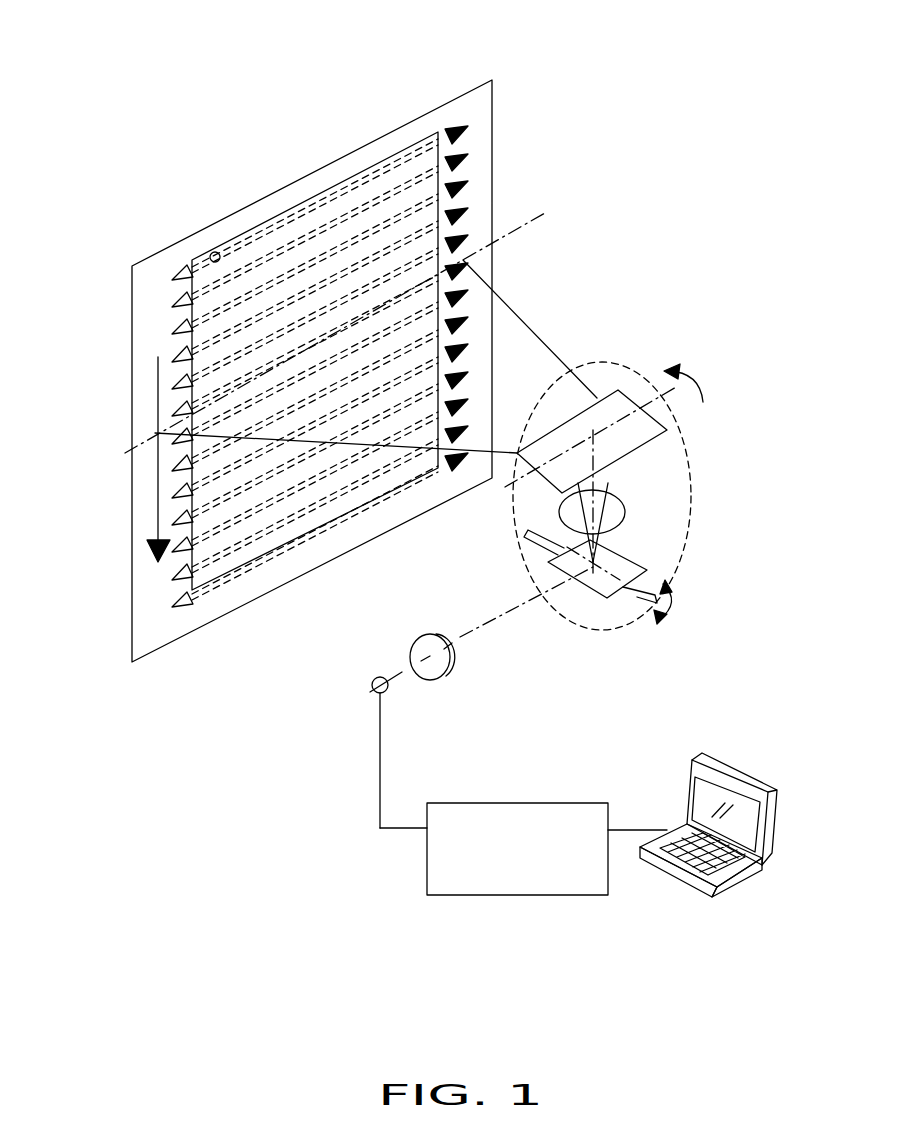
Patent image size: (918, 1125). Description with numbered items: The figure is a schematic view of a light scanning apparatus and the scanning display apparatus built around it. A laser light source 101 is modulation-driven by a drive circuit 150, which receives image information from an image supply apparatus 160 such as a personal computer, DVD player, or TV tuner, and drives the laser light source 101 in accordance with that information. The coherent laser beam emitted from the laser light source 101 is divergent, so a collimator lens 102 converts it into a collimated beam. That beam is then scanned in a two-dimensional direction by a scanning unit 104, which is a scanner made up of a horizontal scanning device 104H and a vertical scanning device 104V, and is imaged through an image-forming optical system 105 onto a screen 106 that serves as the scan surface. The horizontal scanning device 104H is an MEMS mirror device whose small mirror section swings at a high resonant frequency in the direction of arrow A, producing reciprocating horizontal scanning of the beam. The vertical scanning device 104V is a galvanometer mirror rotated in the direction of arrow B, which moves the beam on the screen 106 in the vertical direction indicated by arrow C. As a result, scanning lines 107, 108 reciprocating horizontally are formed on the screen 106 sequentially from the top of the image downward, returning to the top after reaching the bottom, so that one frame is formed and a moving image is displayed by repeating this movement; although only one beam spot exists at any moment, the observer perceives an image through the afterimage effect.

The laser light source 101 is at (380, 688).
The collimator lens 102 is at (448, 672).
The scanning unit 104 is at (692, 473).
The vertical scanning device 104V is at (597, 398).
The horizontal scanning device 104H is at (650, 572).
The image-forming optical system 105 is at (557, 503).
The screen 106 is at (347, 153).
The scanning line 107 is at (313, 200).
The scanning line 108 is at (393, 167).
The drive circuit 150 is at (527, 803).
The image supply apparatus 160 is at (777, 812).
The arrow A is at (660, 598).
The arrow B is at (720, 380).
The arrow C is at (157, 408).